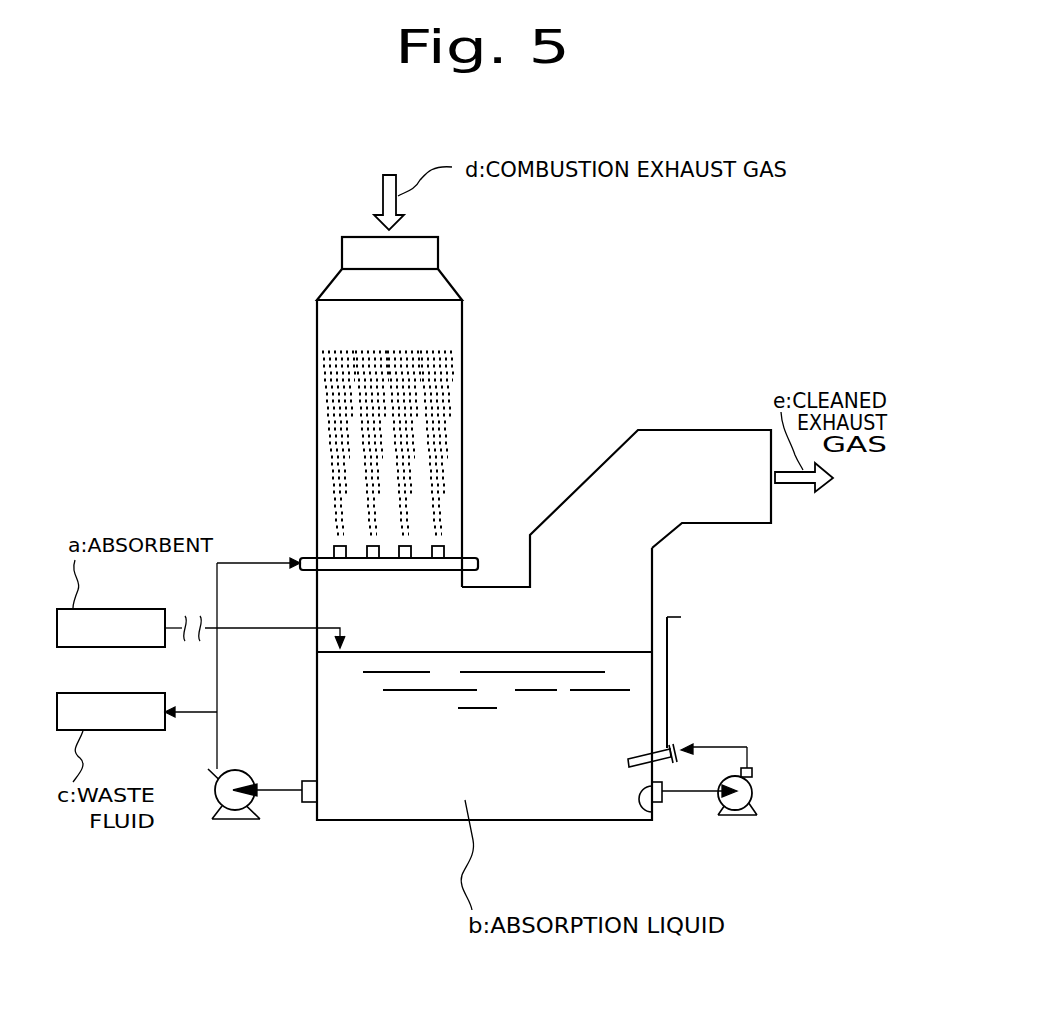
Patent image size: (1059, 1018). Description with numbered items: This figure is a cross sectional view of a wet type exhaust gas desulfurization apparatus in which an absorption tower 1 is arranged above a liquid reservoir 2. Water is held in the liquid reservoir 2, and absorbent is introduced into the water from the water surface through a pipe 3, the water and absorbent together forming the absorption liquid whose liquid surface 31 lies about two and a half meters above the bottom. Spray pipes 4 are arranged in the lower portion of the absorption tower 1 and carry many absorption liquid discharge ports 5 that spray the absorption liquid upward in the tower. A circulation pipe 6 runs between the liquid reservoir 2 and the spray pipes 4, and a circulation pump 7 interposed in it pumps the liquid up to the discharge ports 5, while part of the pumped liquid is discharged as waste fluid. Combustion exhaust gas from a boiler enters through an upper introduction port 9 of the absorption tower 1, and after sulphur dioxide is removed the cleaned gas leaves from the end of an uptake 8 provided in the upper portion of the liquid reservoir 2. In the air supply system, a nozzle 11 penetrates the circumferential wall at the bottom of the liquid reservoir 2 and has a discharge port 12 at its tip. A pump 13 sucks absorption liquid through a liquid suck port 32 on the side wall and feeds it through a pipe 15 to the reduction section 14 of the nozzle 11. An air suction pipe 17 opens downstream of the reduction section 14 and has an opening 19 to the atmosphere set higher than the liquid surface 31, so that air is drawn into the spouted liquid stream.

The absorption tower 1 is at (463, 332).
The liquid reservoir 2 is at (387, 822).
The pipe 3 is at (270, 628).
The spray pipes 4 is at (470, 560).
The absorption liquid discharge ports 5 is at (338, 552).
The circulation pipe 6 is at (217, 745).
The circulation pump 7 is at (236, 810).
The uptake 8 is at (603, 460).
The upper introduction port 9 is at (354, 236).
The nozzle 11 is at (665, 762).
The discharge port 12 is at (628, 764).
The pump 13 is at (753, 793).
The reduction section 14 is at (676, 750).
The pipe 15 is at (747, 746).
The air suction pipe 17 is at (667, 660).
The opening 19 is at (681, 617).
The liquid surface 31 is at (565, 650).
The liquid suck port 32 is at (655, 822).